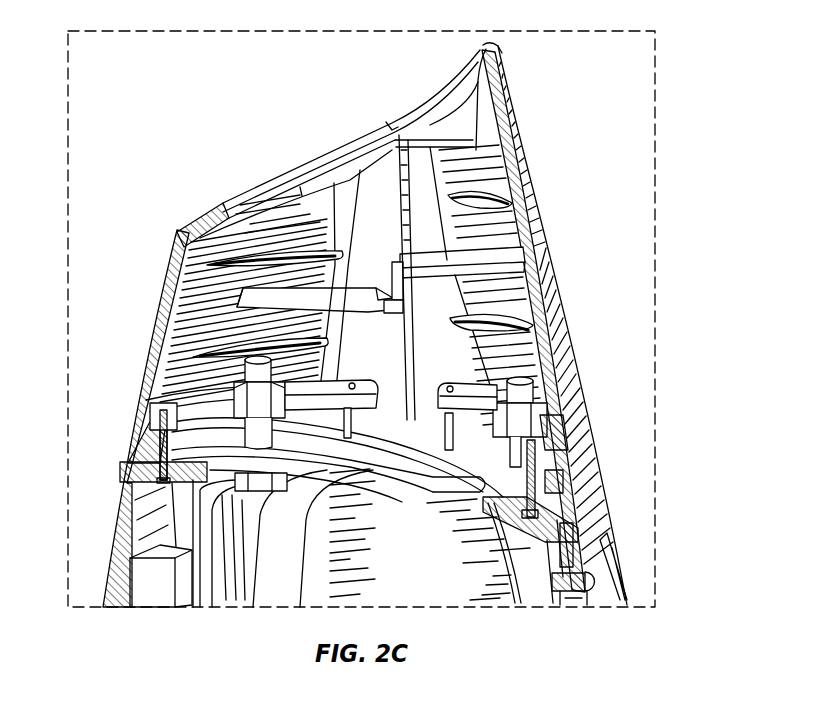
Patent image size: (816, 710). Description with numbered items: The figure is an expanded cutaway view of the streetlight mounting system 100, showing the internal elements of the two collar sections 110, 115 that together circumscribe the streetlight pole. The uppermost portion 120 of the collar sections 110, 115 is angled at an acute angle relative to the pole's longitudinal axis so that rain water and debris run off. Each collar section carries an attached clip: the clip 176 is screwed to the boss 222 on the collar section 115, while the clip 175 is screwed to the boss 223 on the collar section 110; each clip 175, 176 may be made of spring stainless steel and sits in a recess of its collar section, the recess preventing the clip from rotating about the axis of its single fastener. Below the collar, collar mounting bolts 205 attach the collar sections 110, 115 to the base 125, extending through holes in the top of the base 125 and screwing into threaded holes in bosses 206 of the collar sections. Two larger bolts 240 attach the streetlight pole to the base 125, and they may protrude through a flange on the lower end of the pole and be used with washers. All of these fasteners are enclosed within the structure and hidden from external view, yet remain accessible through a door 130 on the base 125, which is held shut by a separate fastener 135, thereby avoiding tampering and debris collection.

The streetlight mounting system 100 is at (157, 86).
The collar section 110 is at (155, 348).
The collar section 115 is at (528, 220).
The uppermost portion 120 is at (197, 219).
The base 125 is at (600, 503).
The door 130 is at (607, 562).
The fastener 135 is at (593, 583).
The clip 175 is at (384, 318).
The clip 176 is at (387, 276).
The collar mounting bolts 205 is at (160, 440).
The bosses 206 is at (553, 450).
The boss 222 is at (513, 270).
The boss 223 is at (240, 300).
The bolts 240 is at (260, 402).